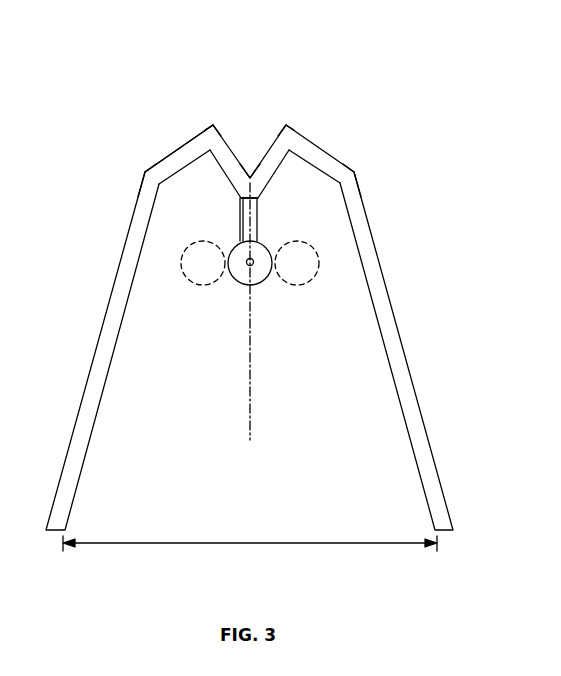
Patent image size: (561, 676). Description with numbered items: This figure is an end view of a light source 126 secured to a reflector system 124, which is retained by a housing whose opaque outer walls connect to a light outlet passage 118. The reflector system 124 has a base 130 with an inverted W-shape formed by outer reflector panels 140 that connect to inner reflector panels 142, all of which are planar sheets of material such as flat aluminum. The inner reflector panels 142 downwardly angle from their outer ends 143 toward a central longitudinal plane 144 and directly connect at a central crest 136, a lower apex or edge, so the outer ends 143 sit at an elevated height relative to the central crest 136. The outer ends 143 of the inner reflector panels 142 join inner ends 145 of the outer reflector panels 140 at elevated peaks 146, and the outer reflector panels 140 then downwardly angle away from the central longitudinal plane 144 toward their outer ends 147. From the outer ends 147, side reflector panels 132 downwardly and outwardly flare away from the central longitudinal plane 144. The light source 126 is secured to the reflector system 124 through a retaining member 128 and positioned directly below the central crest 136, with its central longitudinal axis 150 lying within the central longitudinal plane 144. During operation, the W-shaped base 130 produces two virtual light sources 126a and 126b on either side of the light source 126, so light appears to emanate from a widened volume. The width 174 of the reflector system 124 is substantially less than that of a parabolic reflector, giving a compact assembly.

The light outlet passage 118 is at (190, 510).
The reflector system 124 is at (384, 94).
The light source 126 is at (243, 287).
The virtual light source 126a is at (193, 287).
The virtual light source 126b is at (307, 287).
The retaining member 128 is at (257, 210).
The base 130 is at (145, 172).
The side reflector panels 132 is at (92, 362).
The central crest 136 is at (241, 203).
The outer reflector panels 140 is at (168, 153).
The inner reflector panels 142 is at (250, 178).
The outer ends 143 is at (228, 147).
The central longitudinal plane 144 is at (250, 360).
The inner ends 145 is at (200, 157).
The elevated peaks 146 is at (215, 127).
The outer ends 147 is at (152, 167).
The central longitudinal axis 150 is at (254, 264).
The width 174 is at (250, 546).